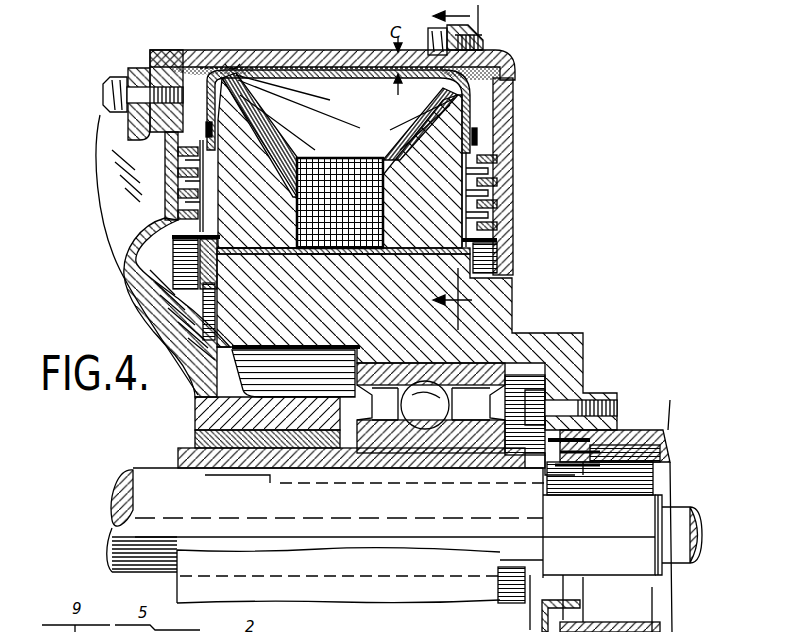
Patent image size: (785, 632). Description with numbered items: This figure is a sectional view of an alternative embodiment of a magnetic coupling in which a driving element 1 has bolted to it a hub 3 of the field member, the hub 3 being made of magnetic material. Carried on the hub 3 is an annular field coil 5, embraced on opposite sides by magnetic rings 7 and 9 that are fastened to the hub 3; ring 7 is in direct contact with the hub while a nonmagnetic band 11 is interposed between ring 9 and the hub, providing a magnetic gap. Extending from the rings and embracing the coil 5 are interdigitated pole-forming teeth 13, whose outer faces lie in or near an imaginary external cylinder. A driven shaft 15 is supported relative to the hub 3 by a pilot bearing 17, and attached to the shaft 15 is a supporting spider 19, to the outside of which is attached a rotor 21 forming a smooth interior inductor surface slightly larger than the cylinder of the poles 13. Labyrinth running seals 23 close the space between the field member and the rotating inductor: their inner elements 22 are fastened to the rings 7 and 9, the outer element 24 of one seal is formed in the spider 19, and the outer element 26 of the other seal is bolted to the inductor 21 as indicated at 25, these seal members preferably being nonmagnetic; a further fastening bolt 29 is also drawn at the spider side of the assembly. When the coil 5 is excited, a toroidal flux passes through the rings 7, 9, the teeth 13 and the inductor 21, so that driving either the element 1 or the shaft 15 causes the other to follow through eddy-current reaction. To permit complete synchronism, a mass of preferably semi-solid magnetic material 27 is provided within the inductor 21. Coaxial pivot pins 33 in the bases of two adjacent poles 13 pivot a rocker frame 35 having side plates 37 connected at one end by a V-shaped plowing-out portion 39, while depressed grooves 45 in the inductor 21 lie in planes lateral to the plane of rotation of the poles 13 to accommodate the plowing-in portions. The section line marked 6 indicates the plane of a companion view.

The driving element 1 is at (632, 430).
The hub 3 is at (505, 312).
The annular field coil 5 is at (338, 252).
The section line 6 is at (464, 167).
The magnetic ring 7 is at (400, 255).
The magnetic ring 9 is at (255, 252).
The nonmagnetic band 11 is at (299, 252).
The pole-forming teeth 13 is at (255, 98).
The driven shaft 15 is at (202, 500).
The pilot bearing 17 is at (446, 410).
The supporting spider 19 is at (150, 305).
The rotor 21 is at (282, 52).
The inner seal element 22 is at (220, 196).
The labyrinth running seal 23 is at (178, 200).
The outer seal element 24 is at (165, 165).
The bolt 25 is at (470, 55).
The outer seal element 26 is at (512, 154).
The semi-solid magnetic material 27 is at (236, 60).
The bolt 29 is at (150, 133).
The pivot pins 33 is at (205, 125).
The rocker frame 35 is at (172, 55).
The side plates 37 is at (206, 96).
The V-shaped plowing-out portion 39 is at (329, 67).
The depressed grooves 45 is at (210, 62).